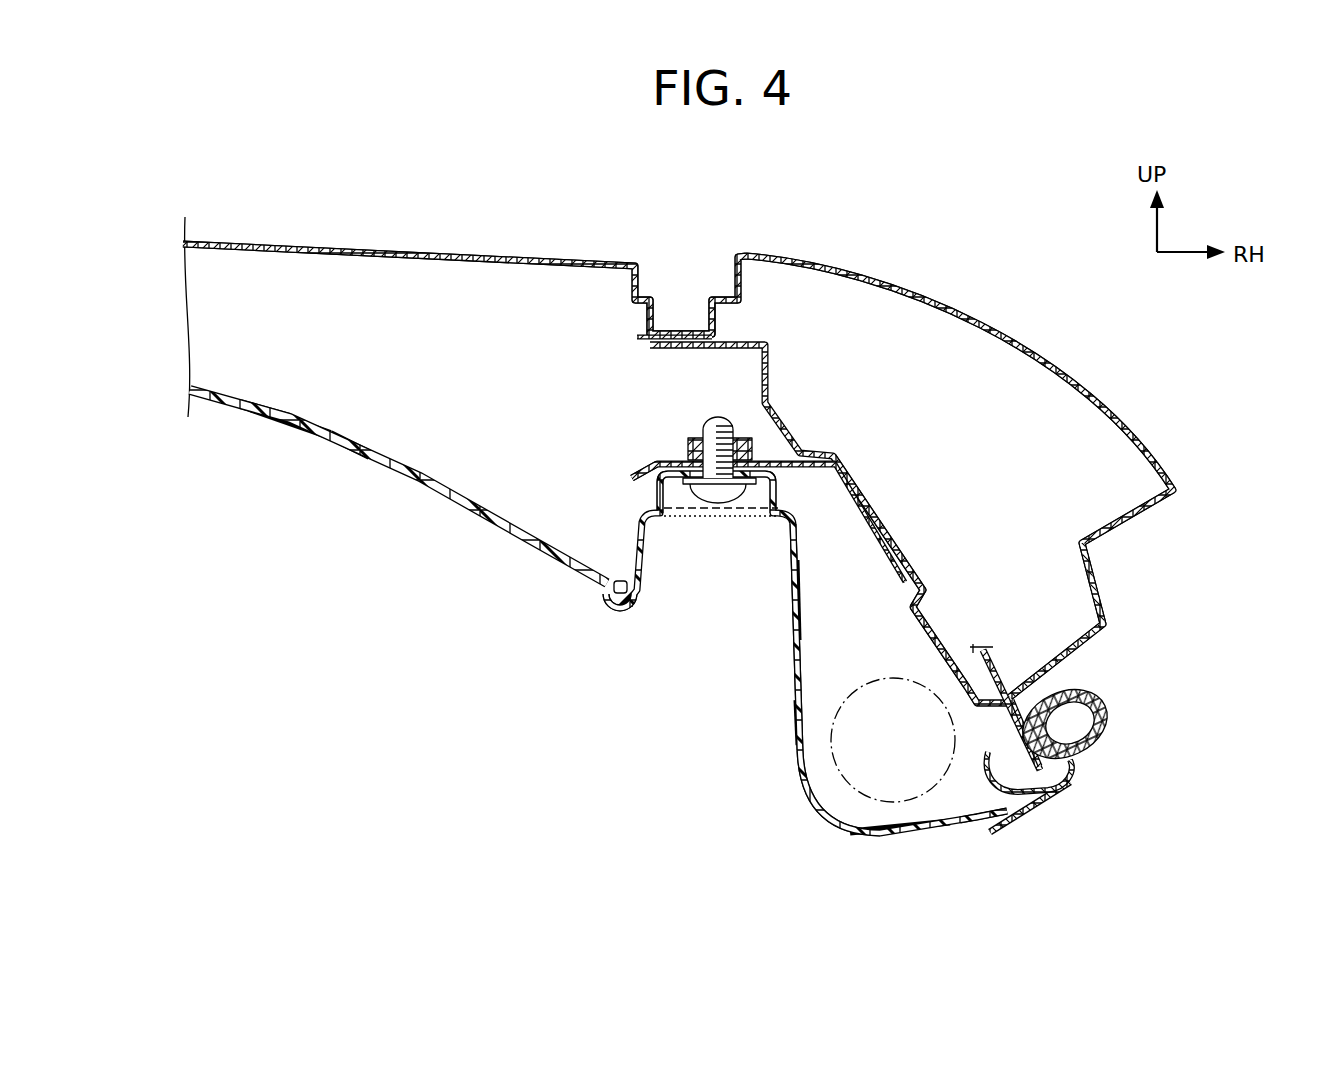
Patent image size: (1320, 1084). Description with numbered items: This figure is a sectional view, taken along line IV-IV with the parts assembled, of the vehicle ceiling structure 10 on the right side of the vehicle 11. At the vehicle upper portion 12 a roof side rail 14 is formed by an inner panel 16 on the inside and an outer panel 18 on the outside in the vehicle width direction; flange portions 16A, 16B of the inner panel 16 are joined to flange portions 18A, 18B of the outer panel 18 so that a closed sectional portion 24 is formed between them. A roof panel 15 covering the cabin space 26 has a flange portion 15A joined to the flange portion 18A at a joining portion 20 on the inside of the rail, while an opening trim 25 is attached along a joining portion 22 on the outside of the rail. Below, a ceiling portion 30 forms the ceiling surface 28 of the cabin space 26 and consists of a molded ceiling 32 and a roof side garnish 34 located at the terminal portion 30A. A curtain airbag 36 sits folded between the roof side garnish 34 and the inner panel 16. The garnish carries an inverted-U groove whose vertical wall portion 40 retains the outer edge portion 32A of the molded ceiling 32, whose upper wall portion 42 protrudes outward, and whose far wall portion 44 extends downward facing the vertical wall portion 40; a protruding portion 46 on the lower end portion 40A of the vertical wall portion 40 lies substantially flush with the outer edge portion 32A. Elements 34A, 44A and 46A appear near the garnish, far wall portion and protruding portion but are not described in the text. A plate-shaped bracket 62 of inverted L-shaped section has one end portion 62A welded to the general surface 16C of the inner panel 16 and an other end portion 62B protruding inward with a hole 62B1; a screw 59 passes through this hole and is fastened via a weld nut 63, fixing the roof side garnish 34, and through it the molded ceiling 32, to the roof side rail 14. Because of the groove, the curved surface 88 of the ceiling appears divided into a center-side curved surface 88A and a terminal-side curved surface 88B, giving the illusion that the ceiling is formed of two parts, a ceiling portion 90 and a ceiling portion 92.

The vehicle ceiling structure 10 is at (681, 549).
The vehicle 11 is at (678, 446).
The vehicle upper portion 12 is at (678, 446).
The roof side rail 14 is at (1066, 380).
The roof panel 15 is at (464, 264).
The flange portion 15A is at (668, 327).
The inner panel 16 is at (828, 531).
The flange portion 16A is at (686, 353).
The flange portion 16B is at (966, 717).
The general surface 16C is at (870, 536).
The outer panel 18 is at (1129, 436).
The flange portion 18A is at (680, 322).
The flange portion 18B is at (1056, 716).
The joining portion 20 is at (618, 336).
The joining portion 22 is at (1004, 670).
The closed sectional portion 24 is at (994, 477).
The opening trim 25 is at (1084, 731).
The cabin space 26 is at (444, 683).
The ceiling surface 28 is at (352, 466).
The ceiling portion 30 is at (650, 618).
The terminal portion 30A is at (1038, 812).
The molded ceiling 32 is at (494, 595).
The outer edge portion 32A is at (618, 580).
The roof side garnish 34 is at (838, 830).
The bottom wall tip 34A is at (980, 826).
The airbag 36 is at (858, 706).
The vertical wall portion 40 is at (792, 689).
The lower end portion 40A is at (613, 612).
The upper wall portion 42 is at (758, 520).
The far wall portion 44 is at (794, 678).
The side wall bottom 44A is at (898, 838).
The protruding portion 46 is at (629, 613).
The lip 46A is at (644, 612).
The screw 59 is at (735, 497).
The bracket 62 is at (737, 513).
The one end portion 62A is at (883, 565).
The other end portion 62B is at (649, 465).
The hole 62B1 is at (726, 488).
The weld nut 63 is at (693, 444).
The curved surface 88 is at (524, 606).
The curved surface 88A is at (311, 442).
The curved surface 88B is at (793, 742).
The ceiling portion 90 is at (279, 420).
The ceiling portion 92 is at (791, 602).